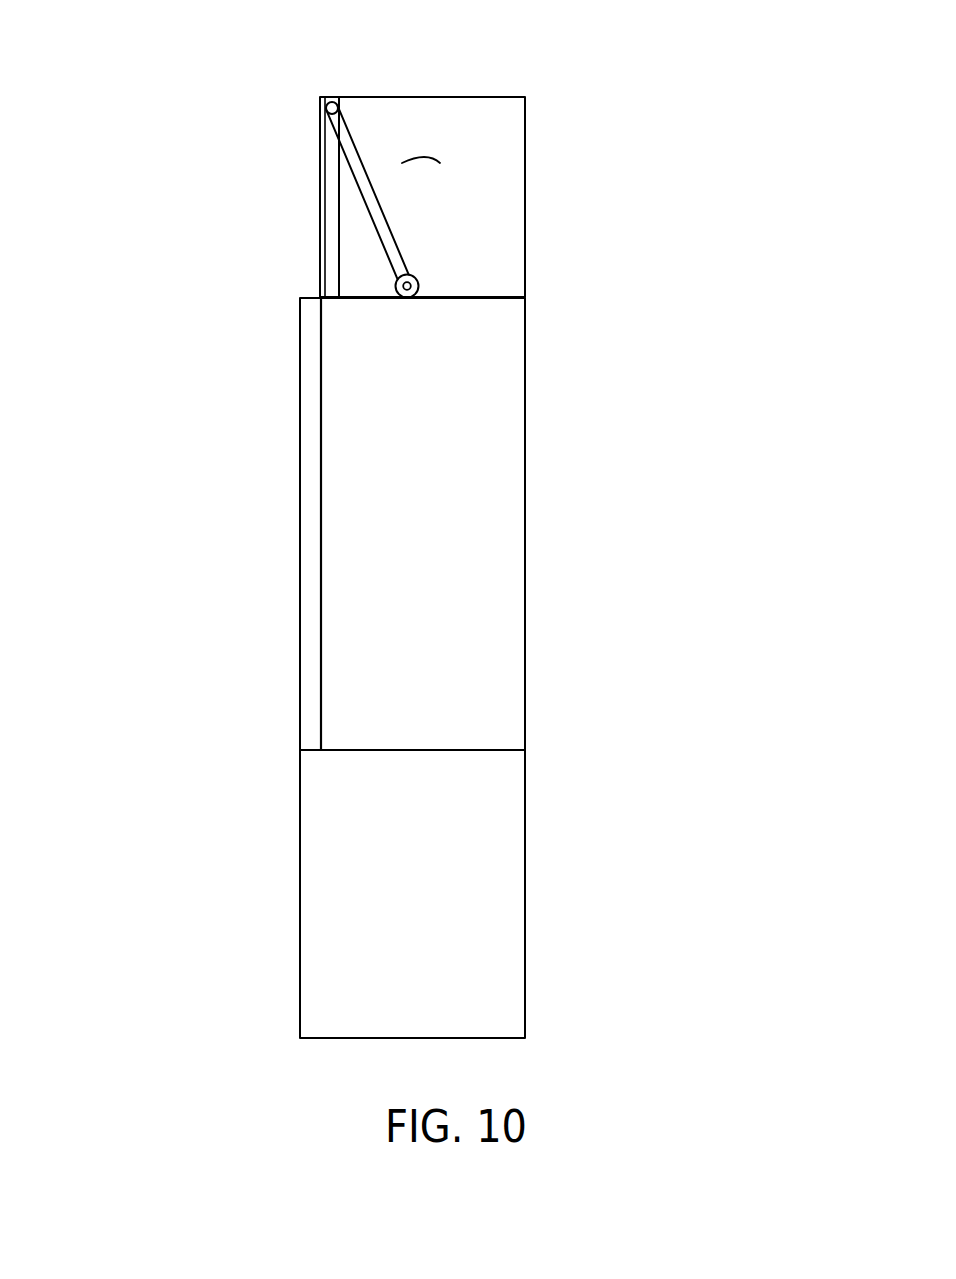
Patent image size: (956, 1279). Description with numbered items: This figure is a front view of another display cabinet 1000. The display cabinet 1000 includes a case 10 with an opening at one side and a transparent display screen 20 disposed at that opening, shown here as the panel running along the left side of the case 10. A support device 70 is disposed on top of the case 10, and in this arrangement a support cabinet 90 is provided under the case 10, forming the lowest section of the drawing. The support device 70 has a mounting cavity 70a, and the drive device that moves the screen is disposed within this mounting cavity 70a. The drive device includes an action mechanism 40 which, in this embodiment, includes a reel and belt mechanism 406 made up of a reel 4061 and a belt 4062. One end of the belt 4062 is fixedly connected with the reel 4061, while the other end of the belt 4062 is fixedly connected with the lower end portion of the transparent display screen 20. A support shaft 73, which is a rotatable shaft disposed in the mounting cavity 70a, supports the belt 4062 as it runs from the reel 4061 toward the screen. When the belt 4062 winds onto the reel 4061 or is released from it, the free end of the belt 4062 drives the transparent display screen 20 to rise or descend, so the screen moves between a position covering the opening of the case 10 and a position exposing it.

The display cabinet 1000 is at (127, 66).
The case 10 is at (480, 390).
The transparent display screen 20 is at (300, 650).
The support cabinet 90 is at (473, 900).
The support device 70 is at (483, 165).
The mounting cavity 70a is at (427, 157).
The support shaft 73 is at (327, 110).
The action mechanism 40 is at (578, 202).
The reel and belt mechanism 406 is at (546, 202).
The reel 4061 is at (418, 283).
The belt 4062 is at (383, 218).